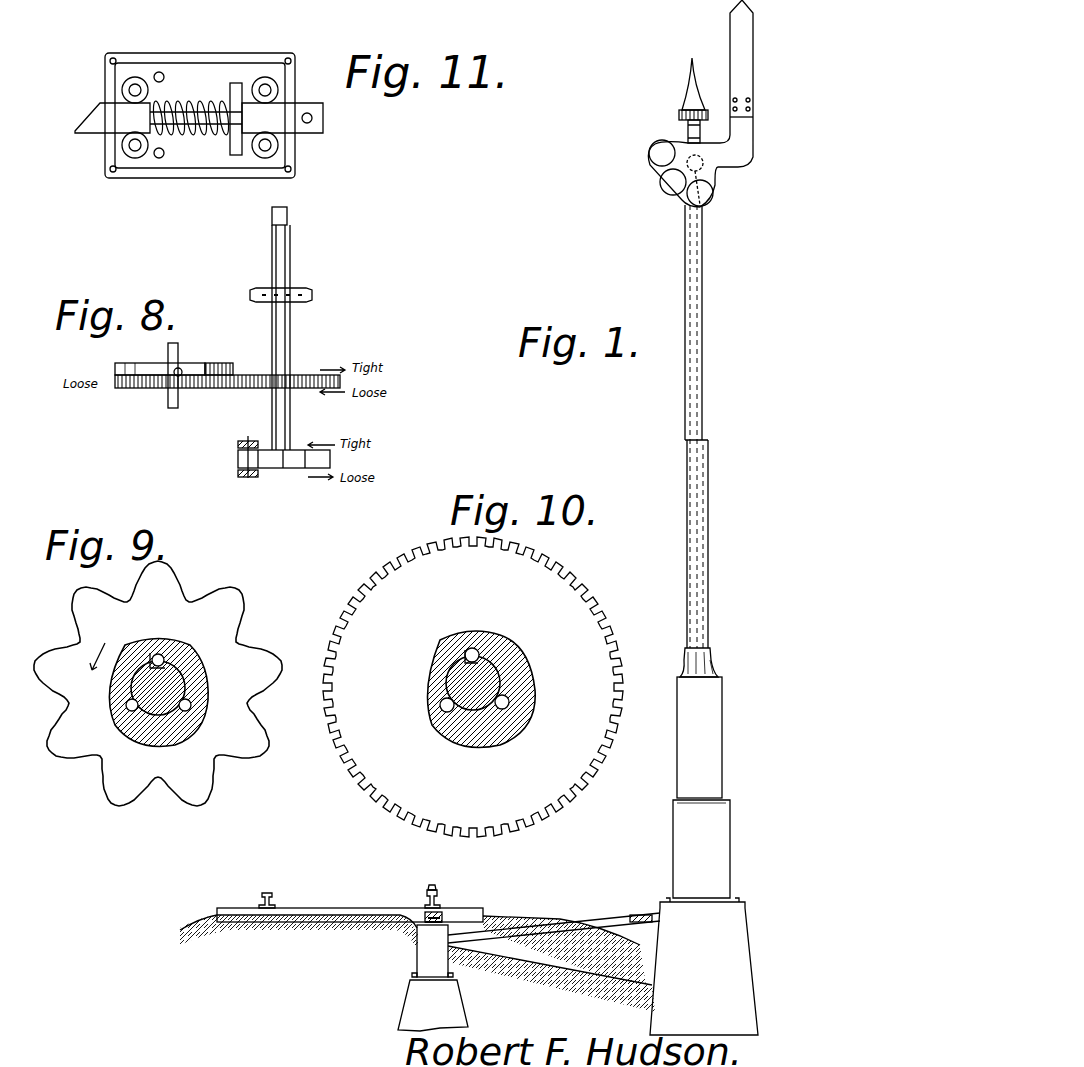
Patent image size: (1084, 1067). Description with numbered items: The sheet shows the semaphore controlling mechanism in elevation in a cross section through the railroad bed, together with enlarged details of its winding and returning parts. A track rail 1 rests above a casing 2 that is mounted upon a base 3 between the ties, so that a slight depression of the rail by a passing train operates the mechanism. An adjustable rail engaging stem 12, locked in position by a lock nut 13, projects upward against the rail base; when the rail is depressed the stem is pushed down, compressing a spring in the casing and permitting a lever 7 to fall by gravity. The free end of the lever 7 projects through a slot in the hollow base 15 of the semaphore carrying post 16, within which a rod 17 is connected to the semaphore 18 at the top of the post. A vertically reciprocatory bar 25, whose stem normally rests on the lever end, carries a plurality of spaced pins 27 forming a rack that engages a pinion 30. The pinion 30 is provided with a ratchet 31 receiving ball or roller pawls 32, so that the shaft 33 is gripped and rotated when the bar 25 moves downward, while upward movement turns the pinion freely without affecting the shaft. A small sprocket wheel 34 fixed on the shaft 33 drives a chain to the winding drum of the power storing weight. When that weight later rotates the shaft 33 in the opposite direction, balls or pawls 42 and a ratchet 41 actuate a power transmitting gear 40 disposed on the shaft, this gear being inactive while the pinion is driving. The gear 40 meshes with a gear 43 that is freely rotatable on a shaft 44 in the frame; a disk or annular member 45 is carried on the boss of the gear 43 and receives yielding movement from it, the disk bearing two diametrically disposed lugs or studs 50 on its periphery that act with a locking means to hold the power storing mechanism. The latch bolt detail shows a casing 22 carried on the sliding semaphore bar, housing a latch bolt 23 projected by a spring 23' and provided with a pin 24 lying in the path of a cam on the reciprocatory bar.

In FIG. 1, the track rail 1 is at (438, 888).
In FIG. 1, the casing 2 is at (428, 952).
In FIG. 1, the base 3 is at (457, 1008).
In FIG. 1, the lever 7 is at (565, 927).
In FIG. 1, the rail engaging stem or pin 12 is at (425, 915).
In FIG. 1, the lock nut 13 is at (445, 918).
In FIG. 1, the hollow base 15 is at (738, 945).
In FIG. 1, the semaphore carrying post or pedestal 16 is at (722, 781).
In FIG. 1, the rod 17 is at (710, 549).
In FIG. 1, the semaphore 18 is at (730, 157).
In FIG. 11, the casing 22 is at (182, 53).
In FIG. 11, the latch bolt 23 is at (181, 116).
In FIG. 11, the spring 23' is at (191, 99).
In FIG. 11, the pin 24 is at (308, 124).
In FIG. 8, the vertically reciprocatory bar 25 is at (245, 478).
In FIG. 8, the pins 27 is at (240, 448).
In FIG. 8, the pinion 30 is at (248, 442).
In FIG. 9, the pinion 30 is at (215, 618).
In FIG. 9, the ratchet 31 is at (195, 650).
In FIG. 9, the ball or roller pawls 32 is at (165, 662).
In FIG. 8, the shaft 33 is at (290, 346).
In FIG. 9, the shaft 33 is at (190, 690).
In FIG. 10, the shaft 33 is at (487, 683).
In FIG. 8, the small sprocket wheel 34 is at (306, 293).
In FIG. 8, the power transmitting gear 40 is at (300, 375).
In FIG. 10, the power transmitting gear 40 is at (580, 604).
In FIG. 10, the ratchet 41 is at (498, 640).
In FIG. 10, the balls or pawls 42 is at (465, 658).
In FIG. 8, the gear 43 is at (205, 380).
In FIG. 8, the shaft 44 is at (180, 355).
In FIG. 8, the disk or annular member 45 is at (210, 363).
In FIG. 8, the lugs or studs 50 is at (174, 370).